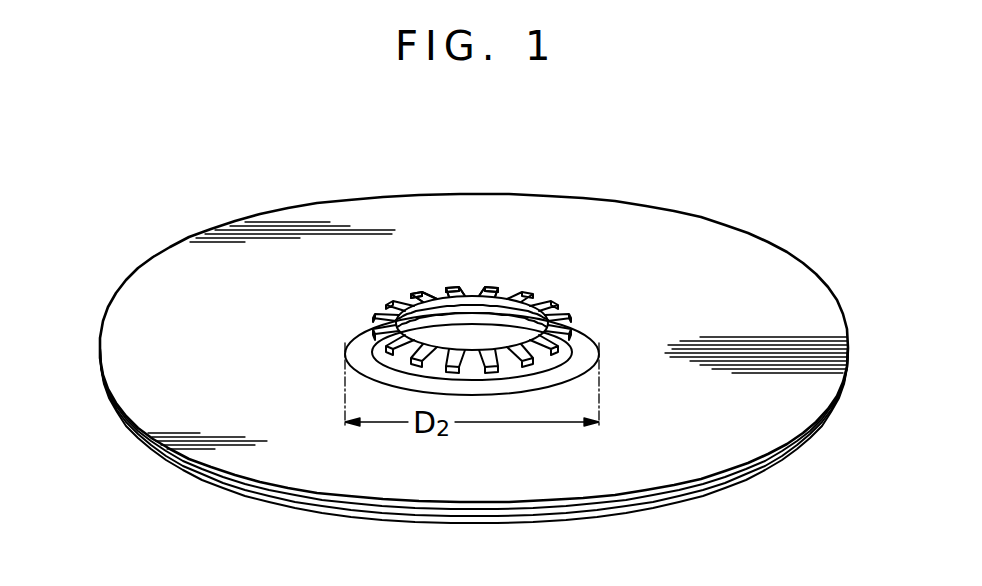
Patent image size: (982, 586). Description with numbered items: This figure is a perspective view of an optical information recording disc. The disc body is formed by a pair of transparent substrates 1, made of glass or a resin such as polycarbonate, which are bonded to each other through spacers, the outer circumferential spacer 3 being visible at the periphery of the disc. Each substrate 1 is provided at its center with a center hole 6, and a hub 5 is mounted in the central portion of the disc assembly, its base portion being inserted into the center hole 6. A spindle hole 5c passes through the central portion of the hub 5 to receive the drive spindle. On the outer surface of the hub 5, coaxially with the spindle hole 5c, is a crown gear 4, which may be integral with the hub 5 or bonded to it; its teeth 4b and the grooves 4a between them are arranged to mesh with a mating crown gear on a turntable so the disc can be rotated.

The substrate 1 is at (752, 248).
The outer circumferential spacer 3 is at (677, 482).
The crown gear 4 is at (555, 305).
The grooves between the teeth of the crown gear 4a is at (443, 290).
The teeth of the crown gear 4b is at (437, 292).
The hub 5 is at (580, 333).
The spindle hole 5c is at (488, 320).
The center hole 6 is at (597, 338).